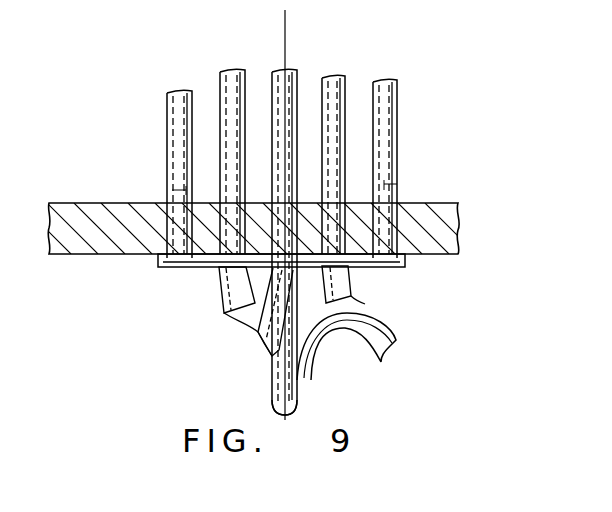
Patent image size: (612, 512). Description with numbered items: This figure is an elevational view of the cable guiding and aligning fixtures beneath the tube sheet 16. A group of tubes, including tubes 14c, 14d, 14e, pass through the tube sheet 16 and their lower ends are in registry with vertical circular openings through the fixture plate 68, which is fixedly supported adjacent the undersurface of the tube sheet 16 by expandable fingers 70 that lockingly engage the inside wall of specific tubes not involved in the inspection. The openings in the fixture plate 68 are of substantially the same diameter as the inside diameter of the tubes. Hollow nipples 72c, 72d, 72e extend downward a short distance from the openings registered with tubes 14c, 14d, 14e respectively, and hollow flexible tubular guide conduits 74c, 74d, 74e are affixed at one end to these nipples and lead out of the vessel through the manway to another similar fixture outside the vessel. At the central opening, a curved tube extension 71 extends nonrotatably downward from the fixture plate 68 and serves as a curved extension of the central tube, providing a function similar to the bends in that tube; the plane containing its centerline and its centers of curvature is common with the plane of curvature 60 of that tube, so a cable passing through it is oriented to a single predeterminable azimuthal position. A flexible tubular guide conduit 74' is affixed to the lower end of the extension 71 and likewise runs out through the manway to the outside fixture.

The tube 14c is at (344, 86).
The tube 14d is at (272, 73).
The tube 14e is at (222, 82).
The tube sheet 16 is at (445, 203).
The plane of curvature 60 is at (285, 60).
The fixture plate 68 is at (157, 258).
The expandable fingers 70 is at (172, 192).
The curved tube extension 71 is at (277, 365).
The hollow nipple 72c is at (350, 270).
The hollow nipple 72d is at (272, 273).
The hollow nipple 72e is at (218, 273).
The flexible tubular guide conduit 74c is at (350, 293).
The flexible tubular guide conduit 74d is at (258, 332).
The flexible tubular guide conduit 74e is at (220, 312).
The flexible tubular guide conduit 74' is at (380, 346).